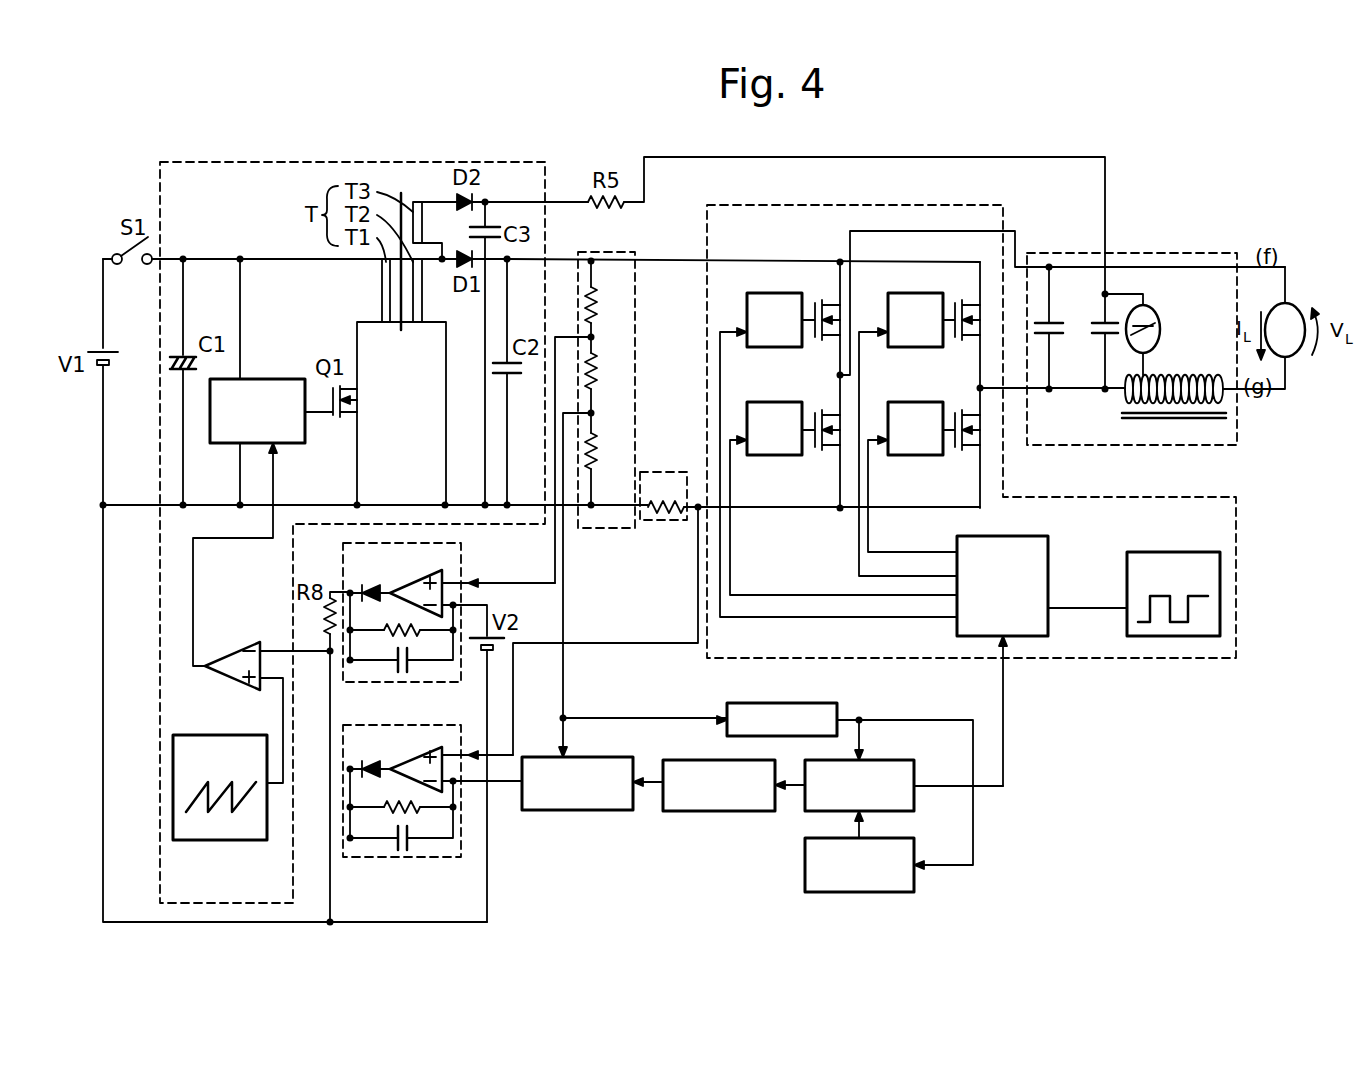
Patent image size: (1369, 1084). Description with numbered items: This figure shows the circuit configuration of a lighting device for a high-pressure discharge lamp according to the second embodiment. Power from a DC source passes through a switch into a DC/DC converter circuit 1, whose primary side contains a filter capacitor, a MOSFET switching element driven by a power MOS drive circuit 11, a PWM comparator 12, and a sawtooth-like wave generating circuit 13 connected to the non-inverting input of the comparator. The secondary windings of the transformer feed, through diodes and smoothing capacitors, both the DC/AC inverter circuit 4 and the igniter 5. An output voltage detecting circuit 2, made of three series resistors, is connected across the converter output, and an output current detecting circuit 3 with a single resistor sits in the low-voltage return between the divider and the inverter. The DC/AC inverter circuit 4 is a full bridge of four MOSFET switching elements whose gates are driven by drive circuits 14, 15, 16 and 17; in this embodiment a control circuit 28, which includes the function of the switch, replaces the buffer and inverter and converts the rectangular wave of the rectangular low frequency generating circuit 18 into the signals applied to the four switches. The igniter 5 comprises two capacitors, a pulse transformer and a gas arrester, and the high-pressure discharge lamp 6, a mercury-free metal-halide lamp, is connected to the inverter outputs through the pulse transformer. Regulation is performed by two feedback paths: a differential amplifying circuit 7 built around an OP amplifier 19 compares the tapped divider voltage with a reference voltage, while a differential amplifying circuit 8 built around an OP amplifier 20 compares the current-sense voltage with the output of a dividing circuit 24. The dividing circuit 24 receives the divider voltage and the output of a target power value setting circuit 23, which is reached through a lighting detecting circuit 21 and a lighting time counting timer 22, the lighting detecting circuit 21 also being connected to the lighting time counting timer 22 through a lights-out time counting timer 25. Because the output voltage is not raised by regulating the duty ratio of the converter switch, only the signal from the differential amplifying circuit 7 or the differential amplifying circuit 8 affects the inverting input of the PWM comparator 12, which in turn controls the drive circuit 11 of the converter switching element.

The DC/DC converter circuit 1 is at (350, 162).
The output voltage detecting circuit 2 is at (610, 252).
The output current detecting circuit 3 is at (650, 472).
The DC/AC inverter circuit 4 is at (900, 205).
The igniter 5 is at (1145, 253).
The high-pressure discharge lamp 6 is at (1291, 358).
The differential amplifying circuit 7 is at (402, 632).
The differential amplifying circuit 8 is at (402, 815).
The power MOS drive circuit 11 is at (266, 378).
The PWM comparator 12 is at (250, 642).
The sawtooth-like wave generating circuit 13 is at (232, 842).
The drive circuit 14 is at (762, 348).
The drive circuit 15 is at (777, 456).
The drive circuit 16 is at (900, 348).
The drive circuit 17 is at (922, 456).
The rectangular low frequency generating circuit 18 is at (1158, 552).
The OP amplifier 19 is at (438, 571).
The OP amplifier 20 is at (438, 748).
The lighting detecting circuit 21 is at (805, 703).
The lighting time counting timer 22 is at (880, 760).
The target power value setting circuit 23 is at (730, 812).
The dividing circuit 24 is at (585, 812).
The lights-out time counting timer 25 is at (905, 838).
The control circuit 28 is at (1010, 536).